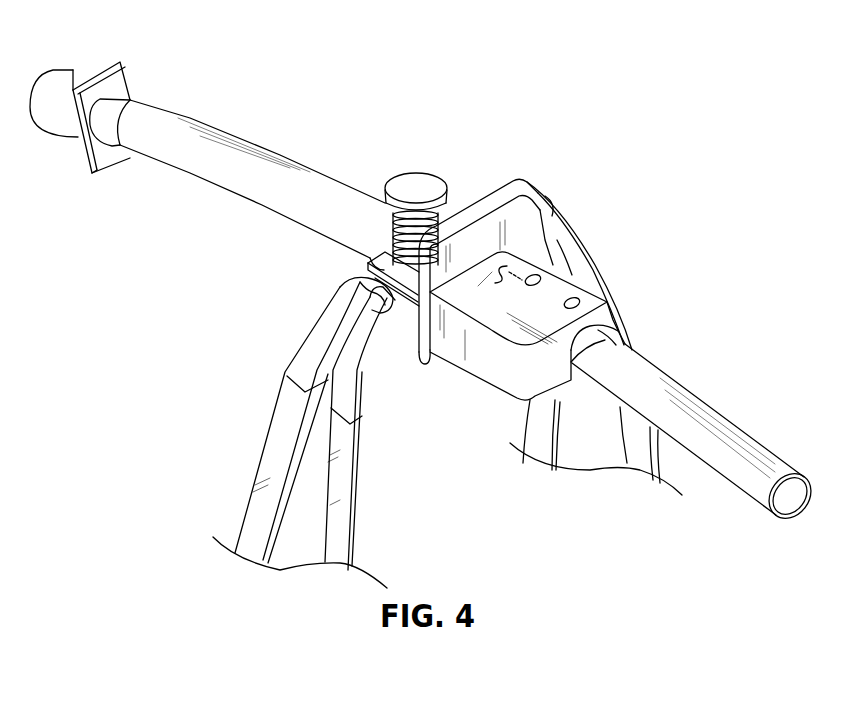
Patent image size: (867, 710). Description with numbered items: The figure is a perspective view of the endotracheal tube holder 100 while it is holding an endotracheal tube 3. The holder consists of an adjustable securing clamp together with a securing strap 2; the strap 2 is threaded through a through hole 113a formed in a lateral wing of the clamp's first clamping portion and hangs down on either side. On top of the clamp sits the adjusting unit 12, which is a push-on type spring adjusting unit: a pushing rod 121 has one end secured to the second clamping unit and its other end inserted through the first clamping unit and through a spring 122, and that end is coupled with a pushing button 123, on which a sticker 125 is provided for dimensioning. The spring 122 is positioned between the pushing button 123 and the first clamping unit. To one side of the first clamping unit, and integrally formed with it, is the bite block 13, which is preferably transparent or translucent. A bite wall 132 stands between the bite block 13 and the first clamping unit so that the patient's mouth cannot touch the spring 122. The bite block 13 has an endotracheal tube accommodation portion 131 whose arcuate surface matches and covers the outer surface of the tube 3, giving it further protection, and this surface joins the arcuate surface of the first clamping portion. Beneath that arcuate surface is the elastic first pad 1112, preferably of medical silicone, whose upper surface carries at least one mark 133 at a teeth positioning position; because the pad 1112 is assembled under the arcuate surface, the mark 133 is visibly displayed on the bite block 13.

The endotracheal tube holder 100 is at (568, 128).
The adjusting unit 12 is at (545, 93).
The pushing rod 121 is at (418, 215).
The spring 122 is at (388, 215).
The pushing button 123 is at (423, 243).
The sticker 125 is at (430, 183).
The bite block 13 is at (597, 308).
The endotracheal tube accommodation portion 131 is at (630, 348).
The bite wall 132 is at (520, 215).
The mark 133 is at (533, 280).
The first pad 1112 is at (610, 330).
The through hole 113a is at (385, 323).
The securing strap 2 is at (268, 463).
The endotracheal tube 3 is at (740, 438).